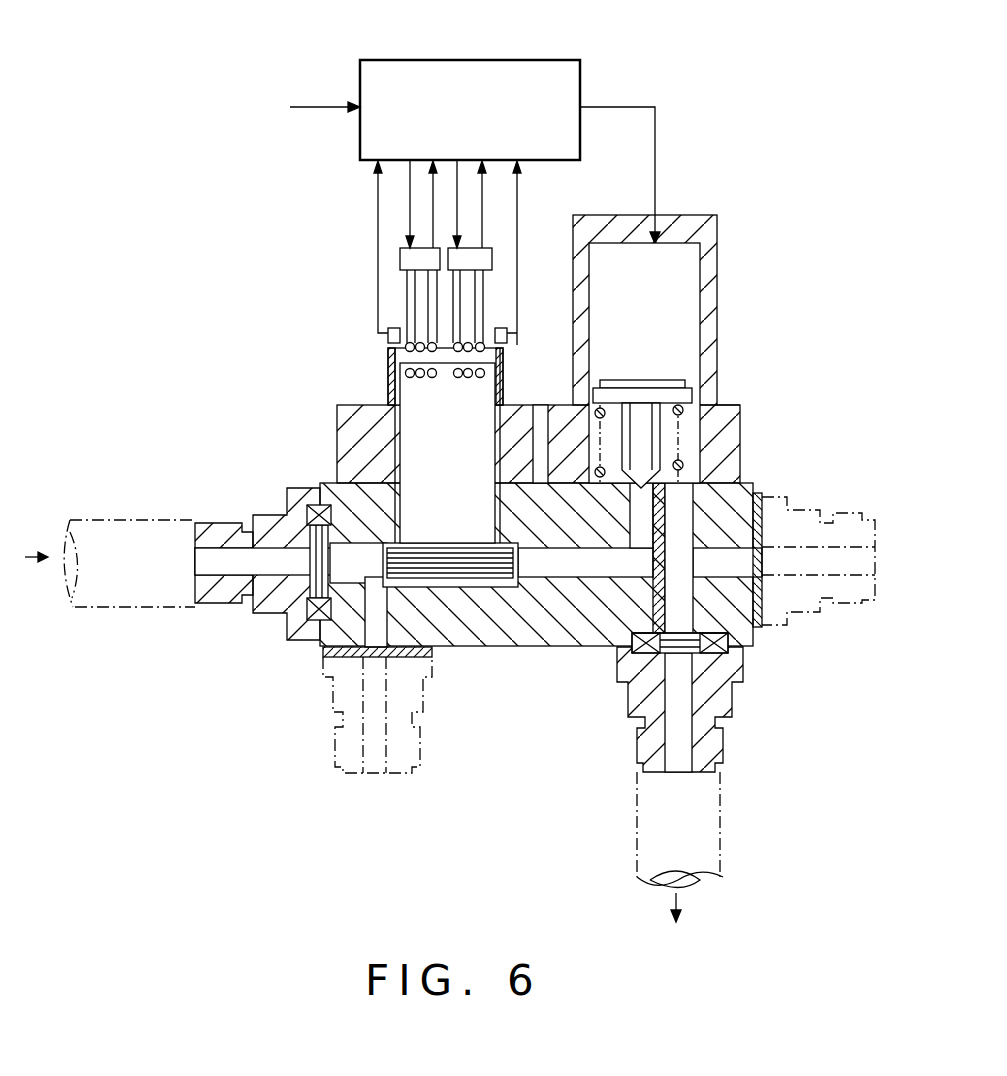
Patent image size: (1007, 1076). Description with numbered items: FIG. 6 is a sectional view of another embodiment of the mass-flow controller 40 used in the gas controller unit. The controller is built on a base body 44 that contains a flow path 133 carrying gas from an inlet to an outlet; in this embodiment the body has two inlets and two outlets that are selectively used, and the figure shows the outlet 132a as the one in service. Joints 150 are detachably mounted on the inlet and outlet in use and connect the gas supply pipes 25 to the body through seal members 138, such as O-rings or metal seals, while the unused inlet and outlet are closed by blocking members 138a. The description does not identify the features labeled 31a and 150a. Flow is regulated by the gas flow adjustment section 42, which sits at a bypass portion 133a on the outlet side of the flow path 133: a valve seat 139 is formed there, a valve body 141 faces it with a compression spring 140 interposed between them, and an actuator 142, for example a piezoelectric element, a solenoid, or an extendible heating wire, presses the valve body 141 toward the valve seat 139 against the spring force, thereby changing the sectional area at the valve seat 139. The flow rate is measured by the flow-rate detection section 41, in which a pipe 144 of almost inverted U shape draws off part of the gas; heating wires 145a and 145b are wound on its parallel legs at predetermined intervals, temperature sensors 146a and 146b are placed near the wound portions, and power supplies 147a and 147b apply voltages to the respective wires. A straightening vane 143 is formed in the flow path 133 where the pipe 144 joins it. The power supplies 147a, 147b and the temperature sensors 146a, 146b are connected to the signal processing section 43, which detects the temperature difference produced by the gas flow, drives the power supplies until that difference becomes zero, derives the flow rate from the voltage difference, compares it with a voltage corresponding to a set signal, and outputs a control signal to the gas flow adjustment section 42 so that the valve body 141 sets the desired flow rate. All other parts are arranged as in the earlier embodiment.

The gas supply pipes 25 is at (140, 602).
The passage 31a is at (353, 578).
The mass-flow controller 40 is at (686, 70).
The flow-rate detection section 41 is at (322, 308).
The gas flow adjustment section 42 is at (738, 290).
The signal processing section 43 is at (484, 58).
The base body 44 is at (470, 654).
The outlet 132a is at (688, 640).
The flow path 133 is at (580, 565).
The bypass portion 133a is at (643, 520).
The seal members 138 is at (310, 520).
The blocking members 138a is at (405, 660).
The valve seat 139 is at (690, 470).
The compression spring 140 is at (692, 392).
The valve body 141 is at (655, 440).
The actuator 142 is at (690, 270).
The straightening vane 143 is at (483, 572).
The pipe 144 is at (392, 395).
The heating wire 145a is at (400, 285).
The heating wire 145b is at (485, 300).
The temperature sensor 146a is at (388, 333).
The temperature sensor 146b is at (528, 351).
The power supply 147a is at (400, 250).
The power supply 147b is at (490, 262).
The joints 150 is at (218, 608).
The fitting passage 150a is at (235, 557).